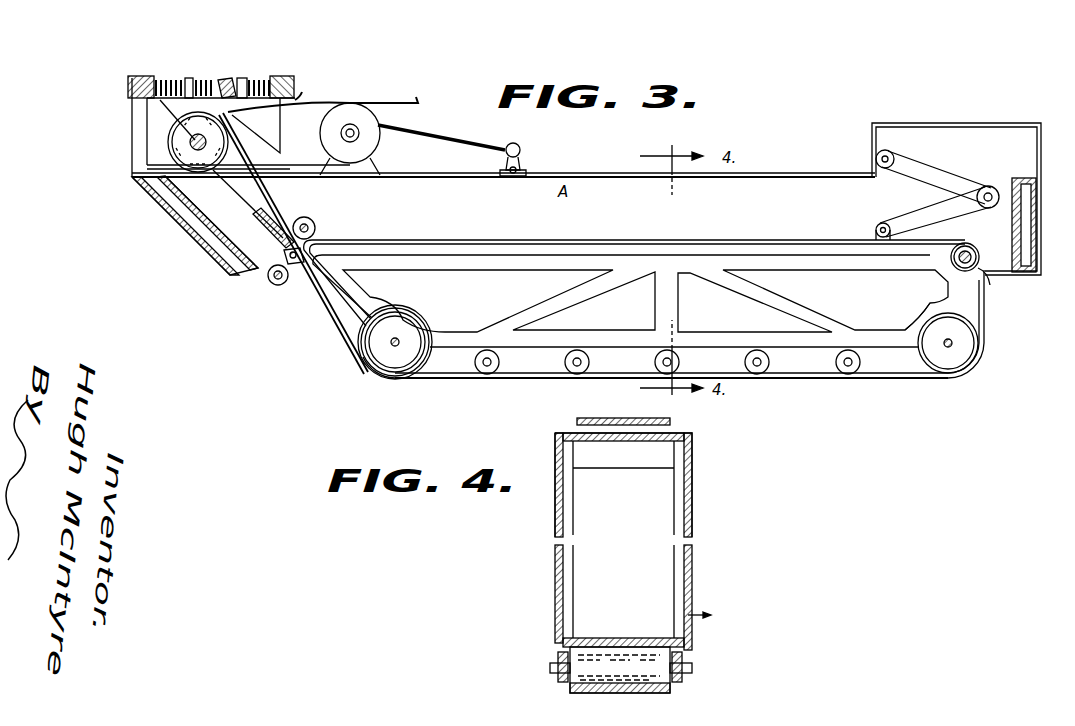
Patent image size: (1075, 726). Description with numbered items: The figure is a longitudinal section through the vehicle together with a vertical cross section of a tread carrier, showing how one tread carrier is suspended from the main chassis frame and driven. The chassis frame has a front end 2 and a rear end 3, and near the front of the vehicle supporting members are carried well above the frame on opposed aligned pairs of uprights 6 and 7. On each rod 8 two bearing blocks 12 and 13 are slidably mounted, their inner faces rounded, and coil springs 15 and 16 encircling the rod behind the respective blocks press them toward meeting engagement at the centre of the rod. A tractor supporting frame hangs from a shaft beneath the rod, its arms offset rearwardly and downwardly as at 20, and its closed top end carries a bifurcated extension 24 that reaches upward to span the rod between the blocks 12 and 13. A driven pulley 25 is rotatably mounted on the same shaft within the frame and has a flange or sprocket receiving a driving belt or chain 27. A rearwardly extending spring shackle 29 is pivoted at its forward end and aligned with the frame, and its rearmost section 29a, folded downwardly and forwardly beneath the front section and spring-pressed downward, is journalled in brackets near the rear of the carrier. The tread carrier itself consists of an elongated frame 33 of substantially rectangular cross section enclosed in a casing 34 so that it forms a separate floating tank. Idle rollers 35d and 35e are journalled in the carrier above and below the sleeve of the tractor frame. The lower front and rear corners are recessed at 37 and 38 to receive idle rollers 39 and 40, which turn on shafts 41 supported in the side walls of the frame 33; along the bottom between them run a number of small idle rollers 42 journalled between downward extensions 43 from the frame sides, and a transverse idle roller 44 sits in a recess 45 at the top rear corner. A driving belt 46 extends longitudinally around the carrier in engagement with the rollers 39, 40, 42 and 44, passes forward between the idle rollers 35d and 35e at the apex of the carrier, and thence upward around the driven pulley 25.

In FIG. 3, the front end 2 is at (163, 213).
In FIG. 3, the rear end 3 is at (1042, 229).
In FIG. 3, the uprights 6 is at (132, 118).
In FIG. 3, the uprights 7 is at (296, 100).
In FIG. 3, the rods 8 is at (165, 80).
In FIG. 3, the bearing block 12 is at (208, 80).
In FIG. 3, the bearing block 13 is at (244, 80).
In FIG. 3, the coil spring 15 is at (189, 78).
In FIG. 3, the coil spring 16 is at (265, 80).
In FIG. 3, the offset portion 20 is at (273, 196).
In FIG. 3, the bifurcated extension 24 is at (228, 80).
In FIG. 3, the driven pulley 25 is at (190, 142).
In FIG. 3, the driving belt or chain 27 is at (320, 105).
In FIG. 3, the spring shackle 29 is at (935, 170).
In FIG. 3, the rearmost shackle section 29a is at (912, 216).
In FIG. 3, the elongated frame 33 is at (516, 310).
In FIG. 4, the elongated frame 33 is at (680, 511).
In FIG. 4, the casing 34 is at (692, 477).
In FIG. 3, the idle roller 35d is at (316, 224).
In FIG. 3, the idle roller 35e is at (274, 286).
In FIG. 3, the recess 37 is at (418, 308).
In FIG. 3, the recess 38 is at (918, 318).
In FIG. 3, the idle roller 39 is at (370, 344).
In FIG. 3, the idle roller 40 is at (962, 333).
In FIG. 4, the idle roller 40 is at (598, 650).
In FIG. 3, the shafts 41 is at (392, 346).
In FIG. 3, the small idle rollers 42 is at (843, 373).
In FIG. 4, the downward extensions 43 is at (560, 655).
In FIG. 3, the idle roller 44 is at (988, 270).
In FIG. 3, the recess 45 is at (950, 265).
In FIG. 3, the driving belt 46 is at (466, 380).
In FIG. 4, the driving belt 46 is at (672, 421).